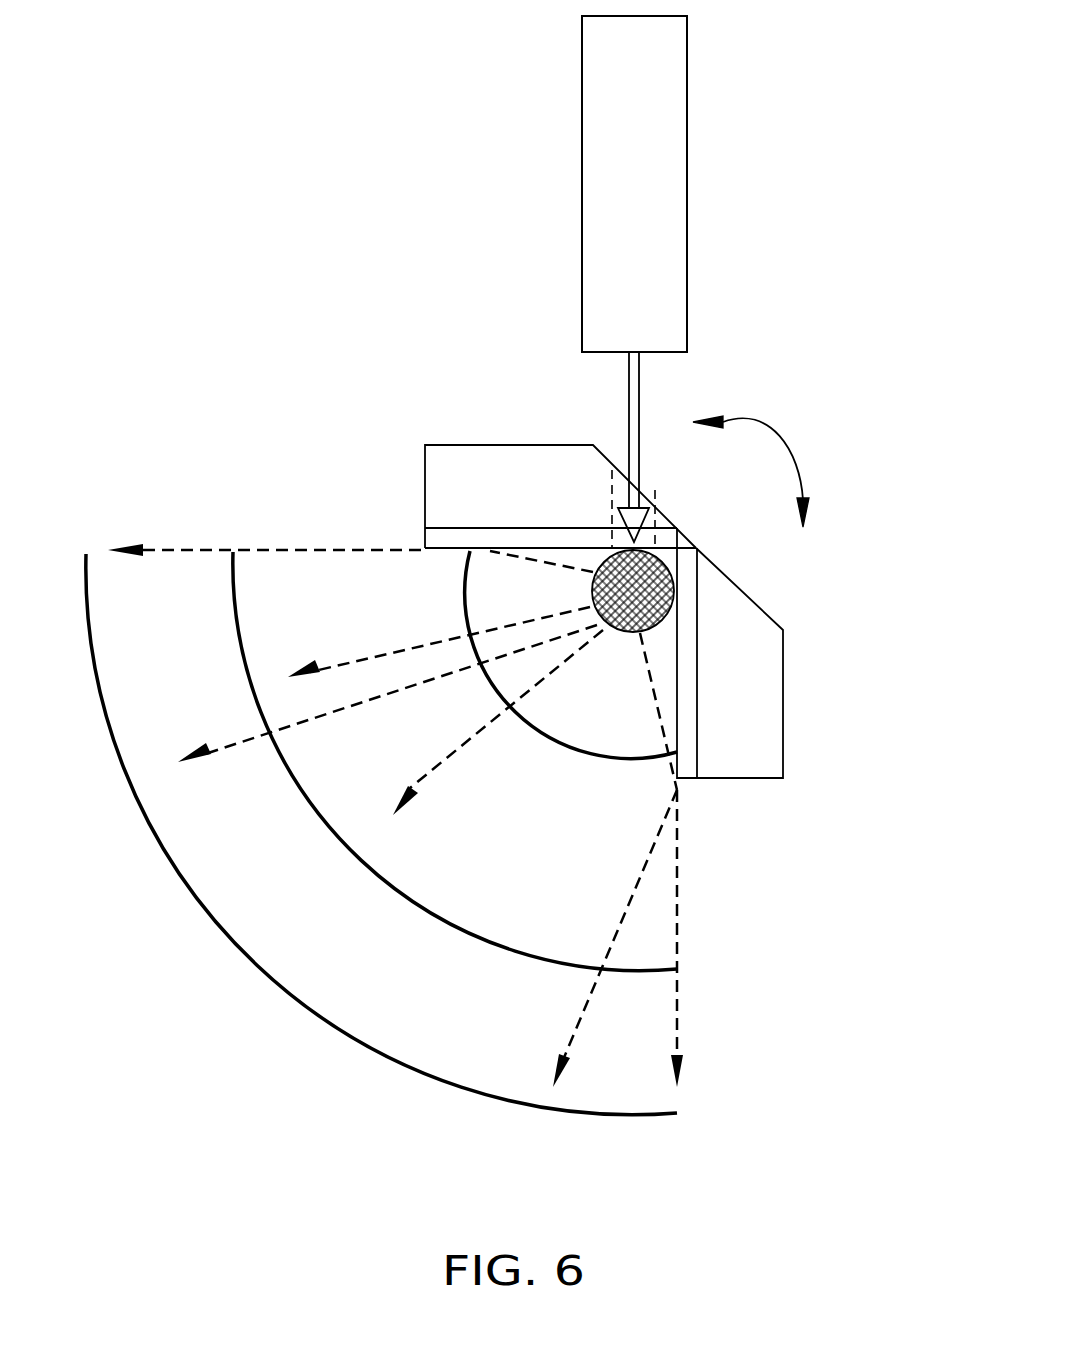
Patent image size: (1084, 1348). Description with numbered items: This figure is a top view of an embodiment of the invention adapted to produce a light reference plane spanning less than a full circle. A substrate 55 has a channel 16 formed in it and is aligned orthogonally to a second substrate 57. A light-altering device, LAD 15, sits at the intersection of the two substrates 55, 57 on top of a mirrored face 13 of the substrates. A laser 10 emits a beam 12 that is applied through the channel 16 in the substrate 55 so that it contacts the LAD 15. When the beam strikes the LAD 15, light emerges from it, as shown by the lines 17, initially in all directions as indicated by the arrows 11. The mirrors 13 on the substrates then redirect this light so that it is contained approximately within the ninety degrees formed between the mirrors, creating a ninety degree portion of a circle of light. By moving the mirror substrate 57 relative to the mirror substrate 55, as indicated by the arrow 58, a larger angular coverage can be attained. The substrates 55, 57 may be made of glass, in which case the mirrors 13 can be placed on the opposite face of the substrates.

The laser 10 is at (582, 165).
The beam 12 is at (640, 402).
The channel 16 is at (612, 487).
The substrate 55 is at (425, 497).
The substrate 57 is at (783, 682).
The arrow 58 is at (785, 450).
The mirrored face 13 is at (455, 552).
The LAD 15 is at (602, 633).
The arrows 11 is at (310, 713).
The lines 17 is at (622, 760).